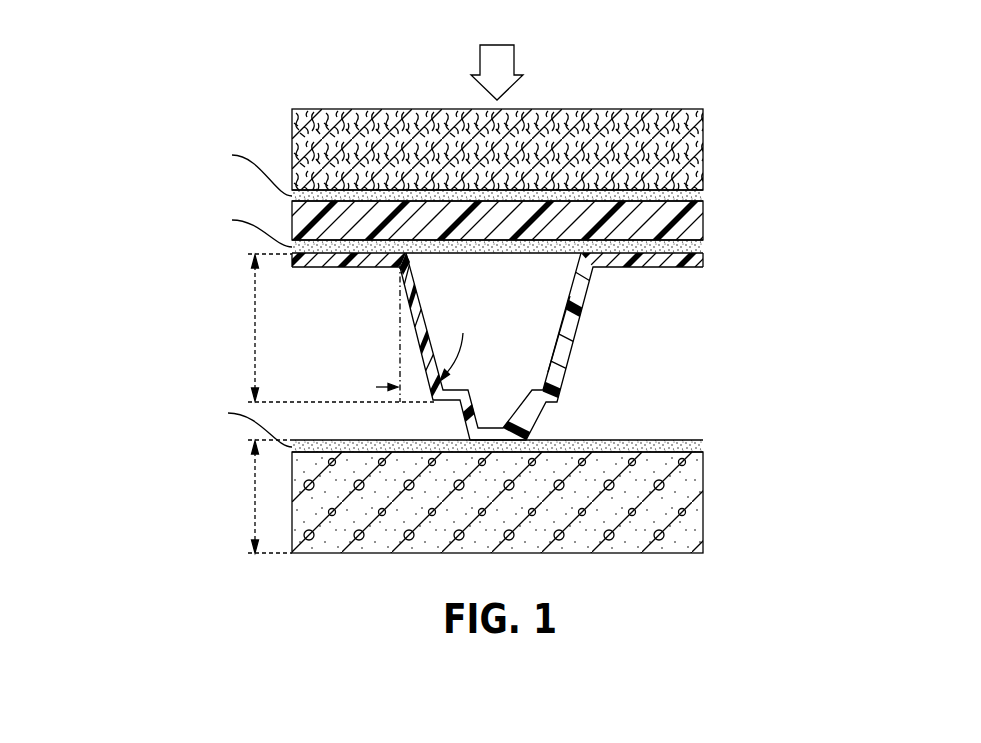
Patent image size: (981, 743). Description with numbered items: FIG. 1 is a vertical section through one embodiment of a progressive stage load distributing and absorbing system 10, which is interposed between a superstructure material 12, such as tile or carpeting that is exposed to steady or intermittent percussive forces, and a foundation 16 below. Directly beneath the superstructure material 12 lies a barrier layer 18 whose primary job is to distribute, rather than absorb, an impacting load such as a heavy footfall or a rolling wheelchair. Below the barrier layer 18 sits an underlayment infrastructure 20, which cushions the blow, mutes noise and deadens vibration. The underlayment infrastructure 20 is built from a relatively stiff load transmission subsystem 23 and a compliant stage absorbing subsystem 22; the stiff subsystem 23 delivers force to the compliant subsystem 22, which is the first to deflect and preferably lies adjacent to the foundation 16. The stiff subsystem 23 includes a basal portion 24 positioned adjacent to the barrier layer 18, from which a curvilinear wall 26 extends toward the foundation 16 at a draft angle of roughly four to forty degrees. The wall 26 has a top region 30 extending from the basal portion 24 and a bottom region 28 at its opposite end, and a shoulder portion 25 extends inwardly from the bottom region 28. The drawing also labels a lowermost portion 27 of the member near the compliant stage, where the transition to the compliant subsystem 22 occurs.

The progressive stage load distributing and absorbing system 10 is at (594, 97).
The superstructure material 12 is at (735, 190).
The barrier layer 18 is at (735, 240).
The underlayment infrastructure 20 is at (735, 440).
The basal portion 24 is at (607, 265).
The curvilinear wall 26 is at (582, 318).
The bottom region 28 is at (560, 370).
The top region 30 is at (408, 264).
The shoulder portion 25 is at (543, 392).
The bottom 27 is at (499, 432).
The stiff stage load transmission subsystem 23 is at (255, 338).
The compliant stage absorbing subsystem 22 is at (255, 497).
The foundation 16 is at (735, 553).